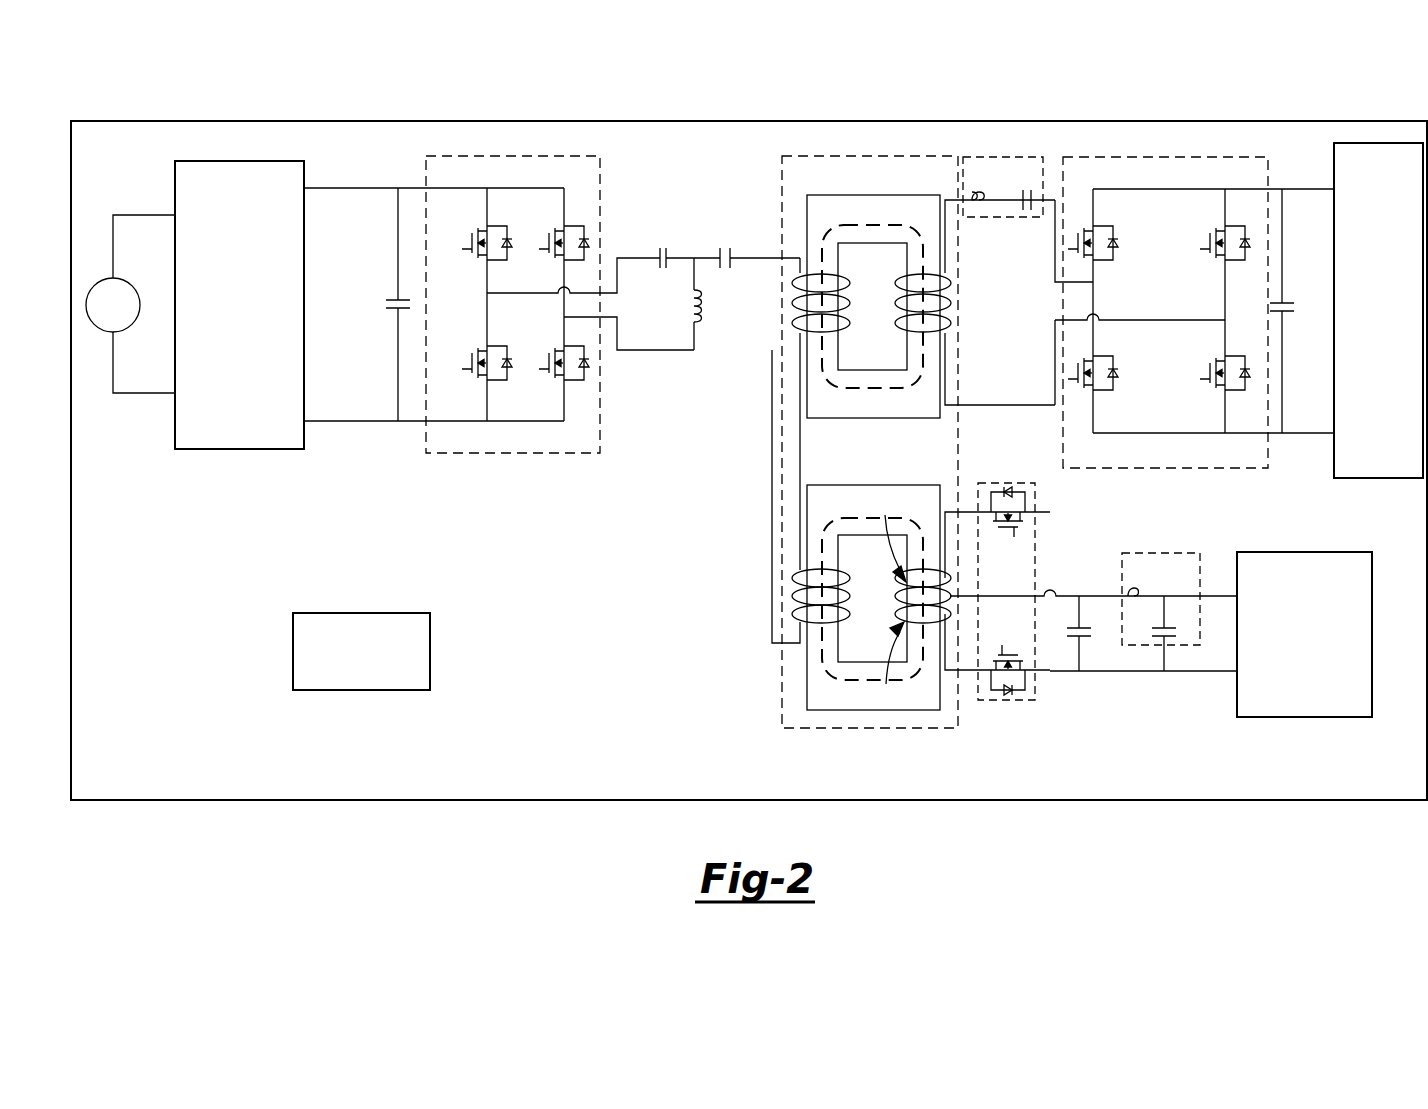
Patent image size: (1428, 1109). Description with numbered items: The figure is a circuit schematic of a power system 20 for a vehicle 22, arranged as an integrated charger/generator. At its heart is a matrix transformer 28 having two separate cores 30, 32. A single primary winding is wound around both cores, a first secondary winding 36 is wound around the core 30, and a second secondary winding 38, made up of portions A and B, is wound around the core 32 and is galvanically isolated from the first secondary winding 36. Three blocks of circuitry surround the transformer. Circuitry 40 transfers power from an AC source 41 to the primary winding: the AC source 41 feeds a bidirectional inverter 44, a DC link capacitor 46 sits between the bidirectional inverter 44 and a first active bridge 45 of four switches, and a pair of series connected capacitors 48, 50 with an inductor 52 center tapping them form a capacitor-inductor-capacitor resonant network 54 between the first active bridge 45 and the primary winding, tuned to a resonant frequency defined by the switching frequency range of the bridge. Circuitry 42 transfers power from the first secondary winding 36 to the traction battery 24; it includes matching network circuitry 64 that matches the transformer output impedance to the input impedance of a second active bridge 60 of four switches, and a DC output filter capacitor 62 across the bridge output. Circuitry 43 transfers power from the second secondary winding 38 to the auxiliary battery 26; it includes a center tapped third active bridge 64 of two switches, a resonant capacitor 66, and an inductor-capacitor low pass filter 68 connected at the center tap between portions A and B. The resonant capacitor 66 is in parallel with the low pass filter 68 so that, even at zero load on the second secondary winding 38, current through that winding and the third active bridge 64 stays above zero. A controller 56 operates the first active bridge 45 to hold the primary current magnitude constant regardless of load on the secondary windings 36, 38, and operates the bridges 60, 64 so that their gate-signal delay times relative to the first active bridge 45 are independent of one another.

The power system 20 is at (235, 627).
The vehicle 22 is at (160, 121).
The traction battery 24 is at (1380, 143).
The auxiliary battery 26 is at (1303, 552).
The matrix transformer 28 is at (870, 156).
The core 30 is at (807, 208).
The core 32 is at (807, 690).
The first secondary winding 36 is at (893, 315).
The second secondary winding 38 is at (890, 606).
The circuitry 40 is at (397, 516).
The AC source 41 is at (105, 283).
The circuitry 42 is at (1272, 82).
The circuitry 43 is at (1143, 626).
The bidirectional inverter 44 is at (240, 450).
The first active bridge 45 is at (515, 156).
The DC link capacitor 46 is at (394, 300).
The capacitor 48 is at (656, 262).
The capacitor 50 is at (735, 253).
The inductor 52 is at (688, 306).
The capacitor-inductor-capacitor resonant network 54 is at (715, 328).
The controller 56 is at (430, 652).
The second active bridge 60 is at (1166, 157).
The DC output filter capacitor 62 is at (1286, 301).
The third active bridge 64 is at (1002, 218).
The resonant capacitor 66 is at (1081, 638).
The inductor-capacitor low pass filter 68 is at (1160, 553).